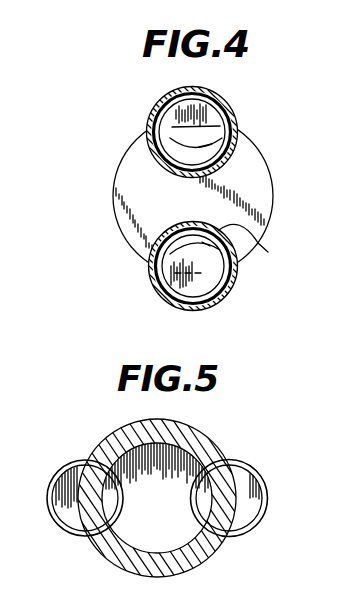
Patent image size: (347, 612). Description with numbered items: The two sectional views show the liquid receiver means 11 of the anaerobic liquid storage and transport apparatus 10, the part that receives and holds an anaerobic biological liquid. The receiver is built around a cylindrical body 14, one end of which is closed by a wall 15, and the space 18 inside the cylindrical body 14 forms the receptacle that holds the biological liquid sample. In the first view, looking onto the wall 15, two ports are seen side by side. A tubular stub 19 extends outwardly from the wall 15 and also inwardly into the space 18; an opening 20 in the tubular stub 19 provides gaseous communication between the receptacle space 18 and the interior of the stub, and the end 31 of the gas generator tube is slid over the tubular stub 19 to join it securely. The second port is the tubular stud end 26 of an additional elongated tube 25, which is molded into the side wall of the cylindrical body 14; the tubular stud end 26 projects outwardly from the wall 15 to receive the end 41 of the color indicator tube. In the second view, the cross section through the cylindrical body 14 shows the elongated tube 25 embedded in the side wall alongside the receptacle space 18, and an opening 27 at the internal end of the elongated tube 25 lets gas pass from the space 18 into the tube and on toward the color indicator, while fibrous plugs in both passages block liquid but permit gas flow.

In FIG. 5, the anaerobic liquid storage and transport apparatus 10 is at (32, 601).
In FIG. 4, the liquid receiver means 11 is at (209, 195).
In FIG. 5, the liquid receiver means 11 is at (162, 503).
In FIG. 5, the cylindrical body 14 is at (160, 495).
In FIG. 4, the wall 15 is at (132, 168).
In FIG. 5, the space 18 is at (100, 549).
In FIG. 4, the tubular stub 19 is at (167, 281).
In FIG. 5, the tubular stub 19 is at (52, 490).
In FIG. 4, the opening 20 is at (257, 247).
In FIG. 5, the elongated tube 25 is at (254, 472).
In FIG. 4, the tubular stud end 26 is at (162, 105).
In FIG. 4, the opening 27 is at (236, 138).
In FIG. 4, the end of tube 31 is at (228, 286).
In FIG. 4, the end of tube 41 is at (234, 108).